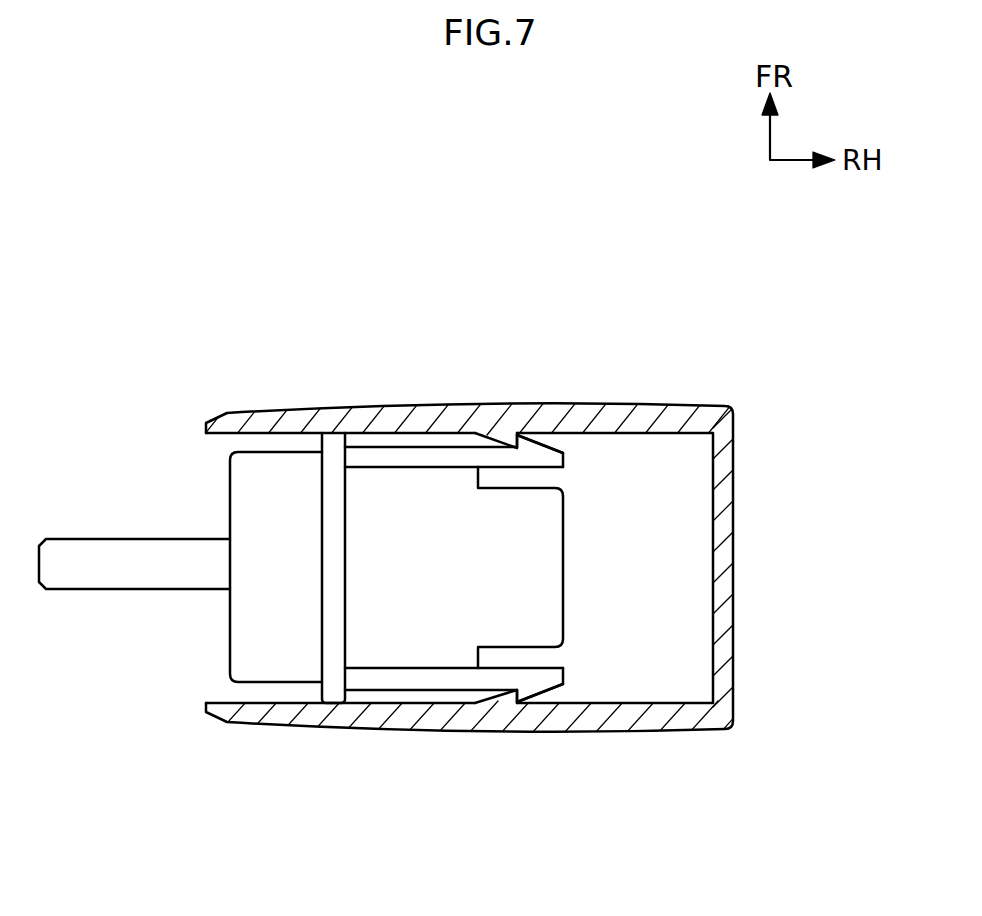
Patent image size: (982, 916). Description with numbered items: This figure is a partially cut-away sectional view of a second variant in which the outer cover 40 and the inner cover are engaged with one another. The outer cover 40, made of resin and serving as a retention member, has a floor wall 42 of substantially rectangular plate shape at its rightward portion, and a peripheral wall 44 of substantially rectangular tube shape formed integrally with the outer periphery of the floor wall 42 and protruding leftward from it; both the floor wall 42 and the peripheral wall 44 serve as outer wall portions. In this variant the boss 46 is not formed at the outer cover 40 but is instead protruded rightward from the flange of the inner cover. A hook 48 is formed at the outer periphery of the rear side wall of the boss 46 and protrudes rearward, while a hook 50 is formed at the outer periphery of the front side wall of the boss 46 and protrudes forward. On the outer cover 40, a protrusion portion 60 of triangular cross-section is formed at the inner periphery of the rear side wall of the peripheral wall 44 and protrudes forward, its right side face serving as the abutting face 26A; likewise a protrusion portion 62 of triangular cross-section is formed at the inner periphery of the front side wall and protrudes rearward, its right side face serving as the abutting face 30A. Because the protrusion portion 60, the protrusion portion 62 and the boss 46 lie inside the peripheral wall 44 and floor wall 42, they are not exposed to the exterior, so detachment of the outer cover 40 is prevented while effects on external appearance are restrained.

The outer cover 40 is at (658, 371).
The floor wall 42 is at (733, 549).
The peripheral wall 44 is at (498, 406).
The boss 46 is at (449, 472).
The hook 48 is at (551, 690).
The hook 50 is at (557, 441).
The protrusion portion 60 is at (498, 694).
The protrusion portion 62 is at (502, 445).
The abutting face 26A is at (538, 698).
The abutting face 30A is at (529, 437).